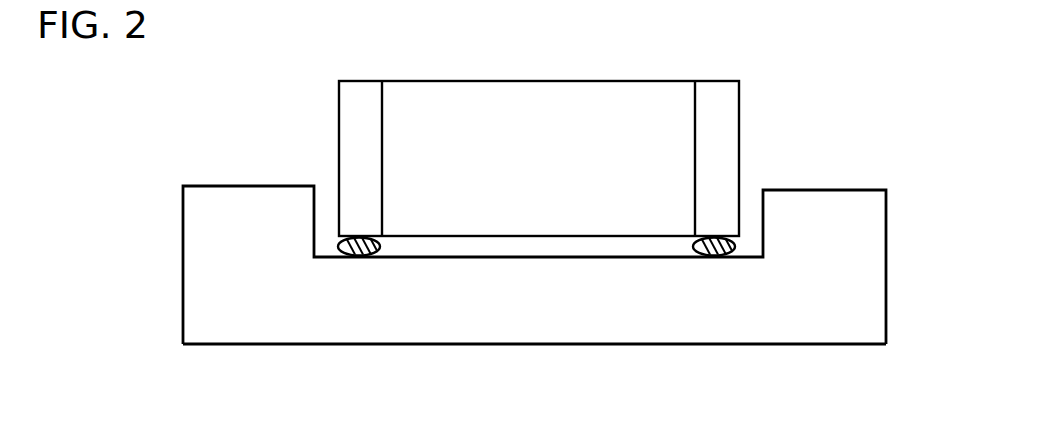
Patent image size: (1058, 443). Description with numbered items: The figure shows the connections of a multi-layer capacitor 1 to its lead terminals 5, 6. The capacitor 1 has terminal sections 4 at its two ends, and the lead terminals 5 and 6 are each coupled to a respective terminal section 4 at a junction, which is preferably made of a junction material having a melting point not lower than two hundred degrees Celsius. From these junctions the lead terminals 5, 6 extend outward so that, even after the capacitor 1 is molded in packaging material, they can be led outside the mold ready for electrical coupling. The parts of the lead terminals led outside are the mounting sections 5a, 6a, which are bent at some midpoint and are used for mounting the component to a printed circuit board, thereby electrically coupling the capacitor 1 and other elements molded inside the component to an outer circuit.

The multi-layer capacitor 1 is at (563, 80).
The terminal section 4 is at (370, 80).
The lead terminal 5 is at (835, 190).
The lead terminal 6 is at (231, 186).
The mounting section 5a is at (846, 345).
The mounting section 6a is at (227, 345).